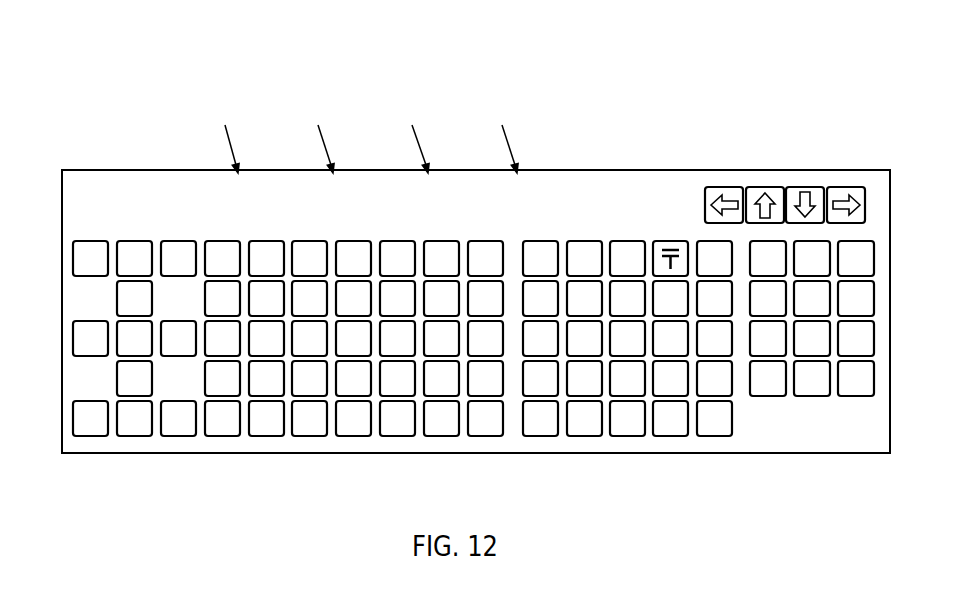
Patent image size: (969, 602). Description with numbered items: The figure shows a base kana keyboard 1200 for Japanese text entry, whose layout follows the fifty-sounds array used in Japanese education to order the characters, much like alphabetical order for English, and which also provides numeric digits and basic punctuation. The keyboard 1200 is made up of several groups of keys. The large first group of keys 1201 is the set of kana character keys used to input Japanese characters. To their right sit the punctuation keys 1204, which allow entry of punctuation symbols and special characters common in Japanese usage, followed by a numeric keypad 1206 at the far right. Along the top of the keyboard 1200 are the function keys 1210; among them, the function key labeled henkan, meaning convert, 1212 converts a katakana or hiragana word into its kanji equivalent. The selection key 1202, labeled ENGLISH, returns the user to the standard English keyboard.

The base kana keyboard 1200 is at (665, 119).
The kana character keys 1201 is at (73, 443).
The selection key 1202 is at (75, 170).
The punctuation keys 1204 is at (735, 443).
The numeric keypad 1206 is at (747, 397).
The function keys 1210 is at (172, 75).
The henkan (convert) function key 1212 is at (185, 173).